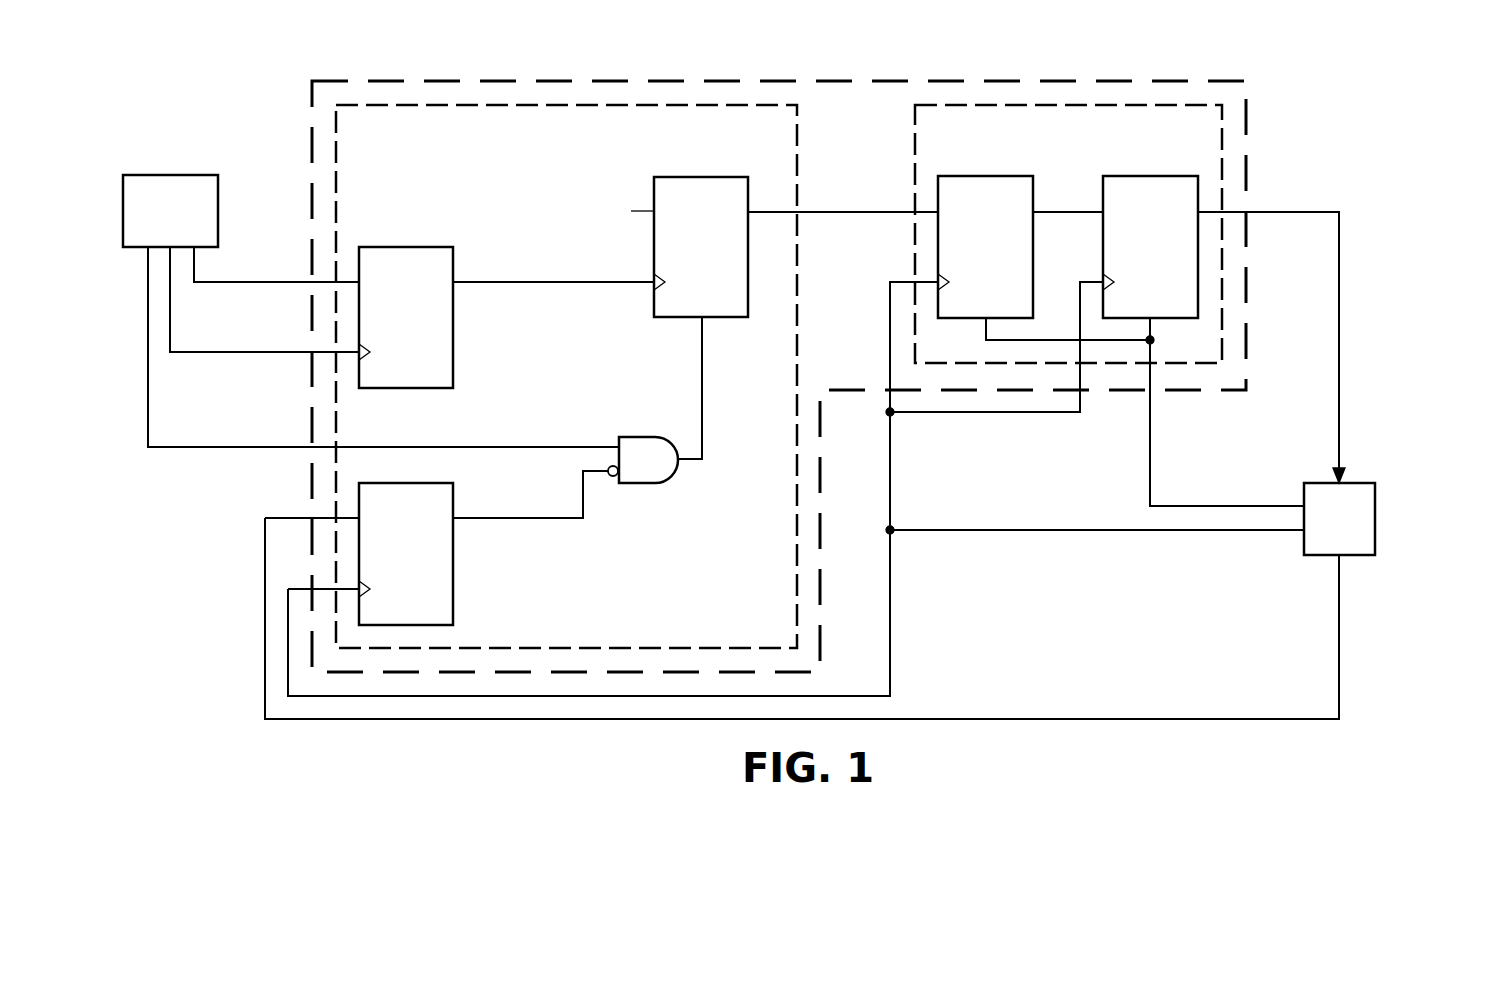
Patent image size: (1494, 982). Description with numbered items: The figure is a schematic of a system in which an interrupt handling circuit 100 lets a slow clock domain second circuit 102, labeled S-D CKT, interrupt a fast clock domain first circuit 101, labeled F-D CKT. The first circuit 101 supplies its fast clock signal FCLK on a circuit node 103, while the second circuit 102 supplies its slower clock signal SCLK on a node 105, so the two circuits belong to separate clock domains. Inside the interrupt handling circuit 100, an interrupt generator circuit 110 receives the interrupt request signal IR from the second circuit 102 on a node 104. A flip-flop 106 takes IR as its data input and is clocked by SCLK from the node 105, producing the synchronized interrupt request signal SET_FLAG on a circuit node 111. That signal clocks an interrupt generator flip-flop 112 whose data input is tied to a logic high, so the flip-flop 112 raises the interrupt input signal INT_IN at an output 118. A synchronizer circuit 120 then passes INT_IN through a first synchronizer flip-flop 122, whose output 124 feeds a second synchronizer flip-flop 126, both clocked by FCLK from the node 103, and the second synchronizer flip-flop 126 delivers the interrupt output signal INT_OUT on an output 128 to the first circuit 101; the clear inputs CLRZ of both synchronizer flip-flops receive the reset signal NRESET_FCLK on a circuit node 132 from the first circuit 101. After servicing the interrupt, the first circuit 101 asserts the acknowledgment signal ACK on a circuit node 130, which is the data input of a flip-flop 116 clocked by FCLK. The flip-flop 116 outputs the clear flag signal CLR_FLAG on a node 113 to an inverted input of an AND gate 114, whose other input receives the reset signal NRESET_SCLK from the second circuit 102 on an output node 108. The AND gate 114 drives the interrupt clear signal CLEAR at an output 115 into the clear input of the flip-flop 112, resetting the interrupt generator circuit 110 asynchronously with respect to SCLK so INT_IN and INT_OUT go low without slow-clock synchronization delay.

The interrupt handling circuit 100 is at (718, 78).
The first circuit 101 is at (1376, 522).
The second circuit 102 is at (163, 174).
The circuit node 103 is at (1097, 532).
The node 104 is at (213, 284).
The node 105 is at (268, 354).
The flip-flop 106 is at (413, 246).
The output node 108 is at (231, 449).
The interrupt generator circuit 110 is at (566, 376).
The circuit node 111 is at (553, 284).
The interrupt generator flip-flop 112 is at (690, 176).
The node 113 is at (518, 520).
The AND gate 114 is at (648, 485).
The output 115 is at (700, 387).
The flip-flop 116 is at (455, 596).
The output 118 is at (858, 214).
The synchronizer circuit 120 is at (908, 134).
The first synchronizer flip-flop 122 is at (1000, 175).
The output 124 is at (1055, 208).
The second synchronizer flip-flop 126 is at (1167, 175).
The output 128 is at (1292, 211).
The circuit node 130 is at (1338, 637).
The circuit node 132 is at (1149, 459).